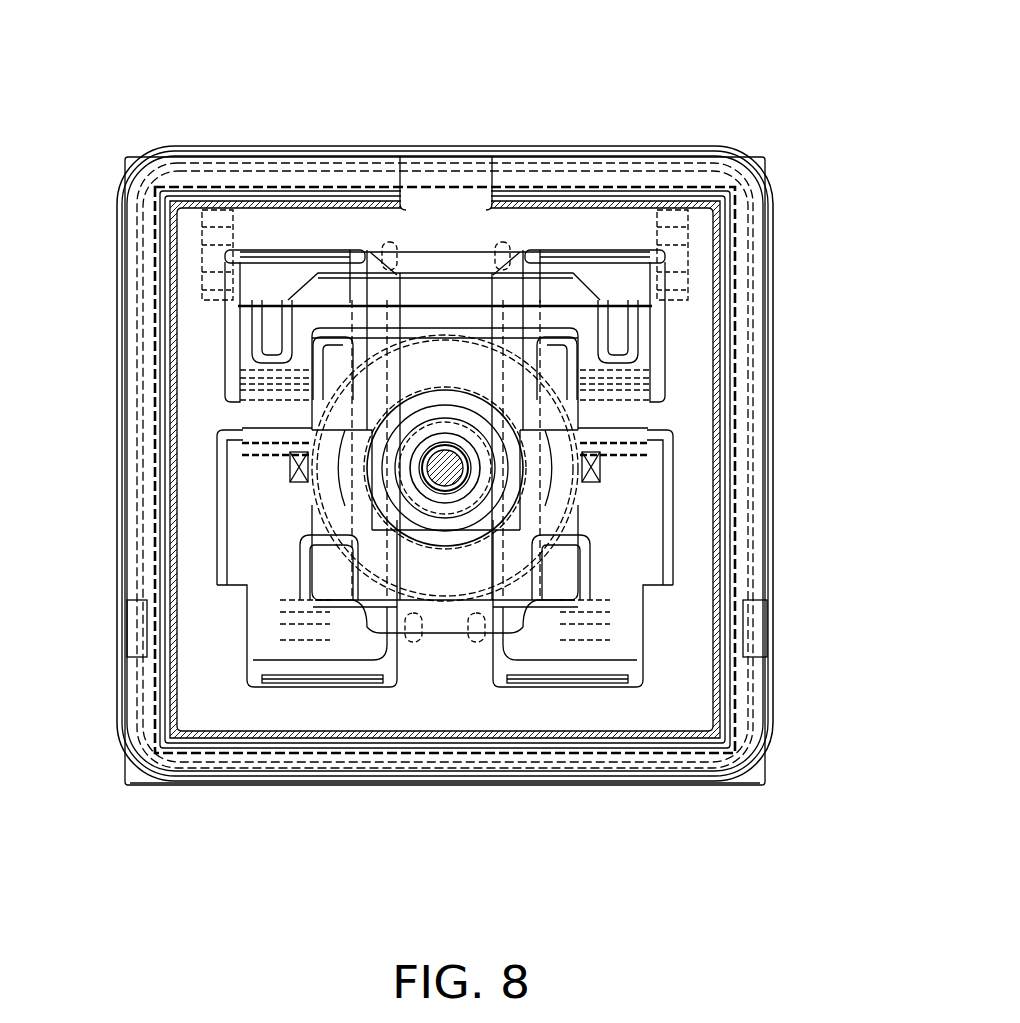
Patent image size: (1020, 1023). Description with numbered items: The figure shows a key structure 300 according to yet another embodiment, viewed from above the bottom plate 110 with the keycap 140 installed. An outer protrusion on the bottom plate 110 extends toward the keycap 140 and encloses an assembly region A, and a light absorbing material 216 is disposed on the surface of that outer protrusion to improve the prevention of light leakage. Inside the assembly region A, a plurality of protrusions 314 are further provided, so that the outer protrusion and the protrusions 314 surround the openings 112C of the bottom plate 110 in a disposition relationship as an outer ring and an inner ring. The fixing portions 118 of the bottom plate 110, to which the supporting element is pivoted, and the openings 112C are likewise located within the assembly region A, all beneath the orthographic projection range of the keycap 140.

The key structure 300 is at (791, 114).
The bottom plate 110 is at (727, 227).
The light absorbing material 216 is at (735, 265).
The protrusions 314 is at (222, 475).
The assembly region A is at (762, 372).
The keycap 140 is at (775, 460).
The openings 112C is at (626, 534).
The fixing portions 118 is at (520, 368).